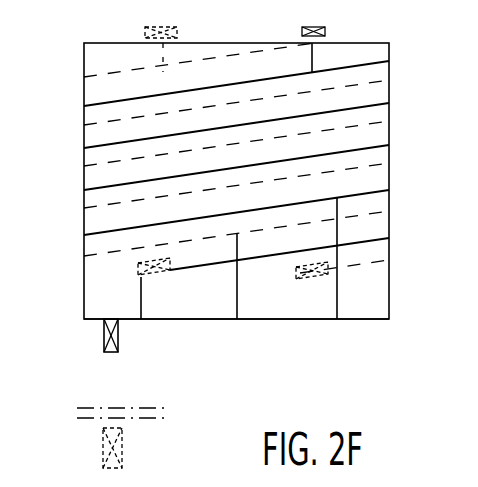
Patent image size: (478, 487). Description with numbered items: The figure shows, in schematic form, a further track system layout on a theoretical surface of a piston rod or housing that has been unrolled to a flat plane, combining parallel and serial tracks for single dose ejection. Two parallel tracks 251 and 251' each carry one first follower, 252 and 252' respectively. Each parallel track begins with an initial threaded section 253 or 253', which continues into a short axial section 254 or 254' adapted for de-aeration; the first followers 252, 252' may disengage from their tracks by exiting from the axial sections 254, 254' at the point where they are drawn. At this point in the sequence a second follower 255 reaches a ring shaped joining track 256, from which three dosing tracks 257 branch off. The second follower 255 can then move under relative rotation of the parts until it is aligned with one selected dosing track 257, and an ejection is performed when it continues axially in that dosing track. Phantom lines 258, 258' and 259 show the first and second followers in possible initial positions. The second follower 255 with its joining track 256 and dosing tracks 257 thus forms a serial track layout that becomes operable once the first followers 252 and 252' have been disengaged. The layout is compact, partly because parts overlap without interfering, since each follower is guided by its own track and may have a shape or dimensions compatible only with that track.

The parallel track 251' is at (201, 100).
The parallel track 251 is at (204, 136).
The first follower 252' is at (191, 23).
The first follower 252 is at (342, 23).
The initial threaded section 253' is at (206, 161).
The initial threaded section 253 is at (204, 192).
The short axial section 254' is at (192, 61).
The short axial section 254 is at (281, 61).
The second follower 255 is at (119, 343).
The ring shaped joining track 256 is at (294, 320).
The dosing track 257 is at (237, 298).
The first follower in initial position 258' is at (131, 284).
The first follower in initial position 258 is at (300, 288).
The second follower in initial position 259 is at (125, 455).